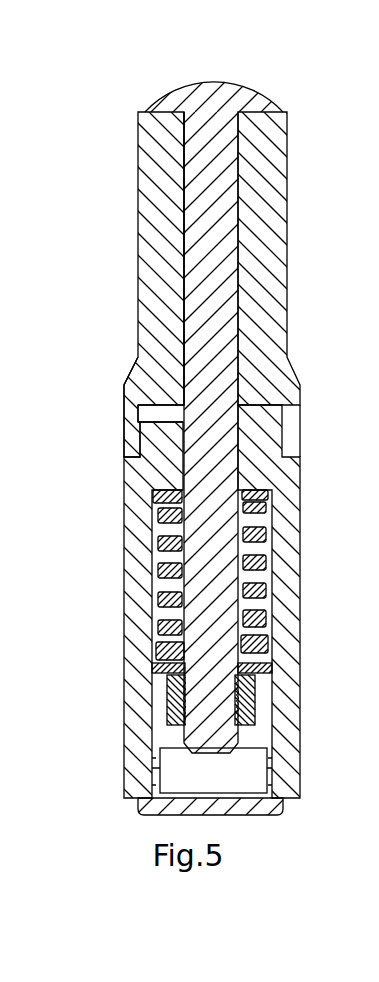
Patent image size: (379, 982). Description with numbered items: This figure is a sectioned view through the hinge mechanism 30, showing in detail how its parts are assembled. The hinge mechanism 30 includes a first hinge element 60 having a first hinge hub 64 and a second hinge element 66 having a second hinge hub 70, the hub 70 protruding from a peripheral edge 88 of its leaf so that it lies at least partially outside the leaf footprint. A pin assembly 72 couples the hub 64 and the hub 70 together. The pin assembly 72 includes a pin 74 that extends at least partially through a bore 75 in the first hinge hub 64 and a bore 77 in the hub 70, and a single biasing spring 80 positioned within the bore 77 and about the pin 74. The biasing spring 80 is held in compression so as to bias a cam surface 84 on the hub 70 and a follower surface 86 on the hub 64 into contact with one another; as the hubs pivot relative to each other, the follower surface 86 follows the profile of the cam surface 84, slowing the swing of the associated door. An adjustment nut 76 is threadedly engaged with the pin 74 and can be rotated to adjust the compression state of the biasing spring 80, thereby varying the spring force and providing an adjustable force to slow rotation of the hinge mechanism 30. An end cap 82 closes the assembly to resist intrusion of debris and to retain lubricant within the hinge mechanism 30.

The hinge mechanism 30 is at (108, 142).
The first hinge element 60 is at (187, 284).
The first hinge hub 64 is at (160, 177).
The pin assembly 72 is at (146, 110).
The pin 74 is at (233, 222).
The bore 75 is at (190, 280).
The follower surface 86 is at (123, 403).
The cam surface 84 is at (138, 415).
The second hinge element 66 is at (248, 601).
The second hinge hub 70 is at (287, 494).
The bore 77 is at (153, 518).
The biasing spring 80 is at (158, 620).
The peripheral edge 88 is at (272, 666).
The adjustment nut 76 is at (167, 697).
The end cap 82 is at (158, 810).